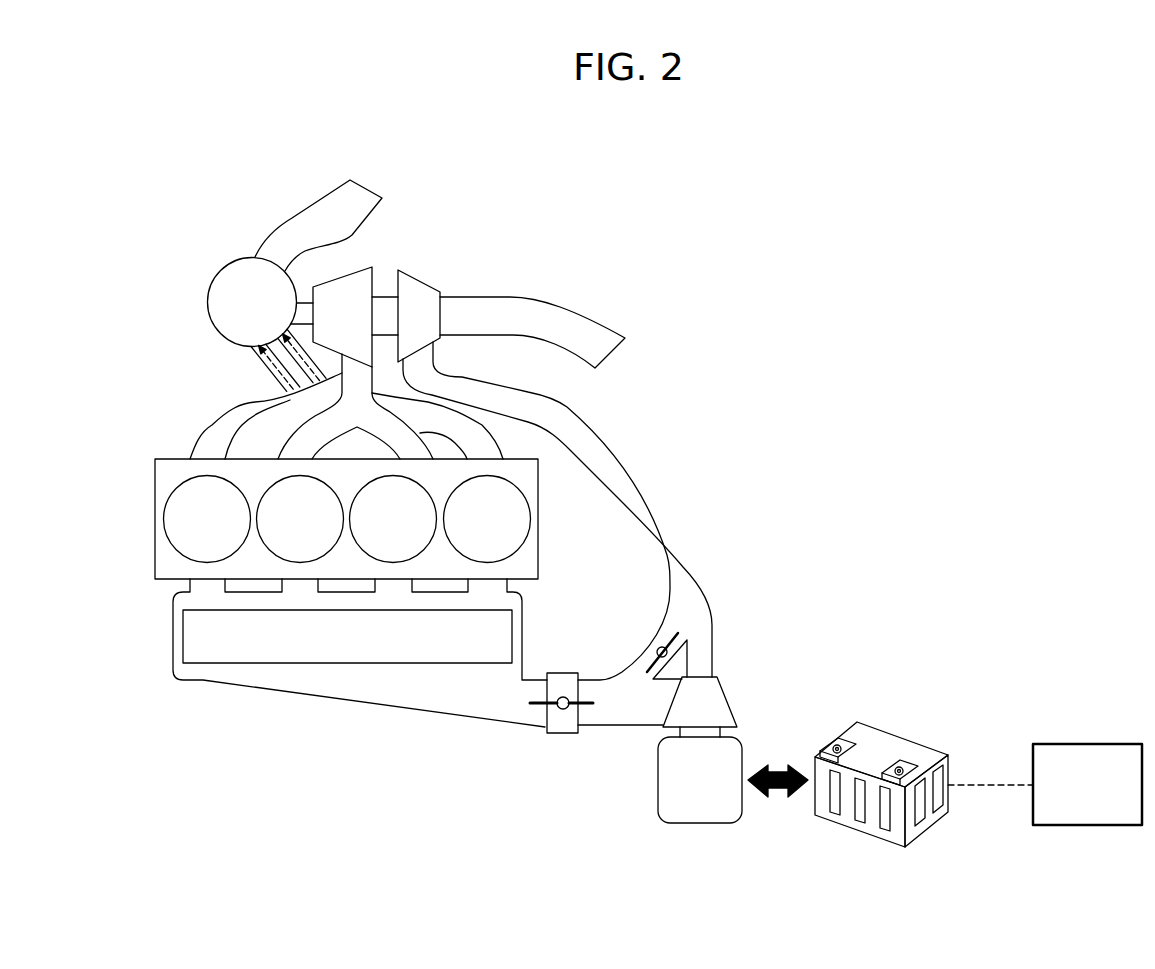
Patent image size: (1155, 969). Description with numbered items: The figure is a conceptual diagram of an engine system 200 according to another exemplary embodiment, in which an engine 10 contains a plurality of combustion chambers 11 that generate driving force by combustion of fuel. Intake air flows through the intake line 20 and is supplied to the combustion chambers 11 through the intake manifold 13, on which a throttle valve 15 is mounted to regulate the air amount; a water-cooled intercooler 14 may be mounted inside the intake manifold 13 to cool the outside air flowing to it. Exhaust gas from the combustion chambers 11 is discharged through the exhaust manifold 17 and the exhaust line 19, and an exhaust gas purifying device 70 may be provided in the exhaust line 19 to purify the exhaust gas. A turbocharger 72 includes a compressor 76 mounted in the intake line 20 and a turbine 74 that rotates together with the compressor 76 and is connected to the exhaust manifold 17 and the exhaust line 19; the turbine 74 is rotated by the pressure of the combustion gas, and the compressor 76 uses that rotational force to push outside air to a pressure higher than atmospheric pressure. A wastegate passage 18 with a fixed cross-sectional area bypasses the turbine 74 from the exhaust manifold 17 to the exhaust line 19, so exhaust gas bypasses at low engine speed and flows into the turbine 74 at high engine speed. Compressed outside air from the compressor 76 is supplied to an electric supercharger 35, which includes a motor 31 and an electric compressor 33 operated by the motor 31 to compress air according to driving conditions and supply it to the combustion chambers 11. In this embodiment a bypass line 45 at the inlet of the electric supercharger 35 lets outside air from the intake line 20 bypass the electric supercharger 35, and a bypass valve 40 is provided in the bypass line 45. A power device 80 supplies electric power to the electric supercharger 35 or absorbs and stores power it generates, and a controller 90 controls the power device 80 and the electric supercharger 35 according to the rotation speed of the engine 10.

The engine system 200 is at (662, 140).
The engine 10 is at (299, 519).
The combustion chamber 11 is at (177, 488).
The intake manifold 13 is at (323, 668).
The water-cooled intercooler 14 is at (247, 663).
The throttle valve 15 is at (545, 717).
The exhaust manifold 17 is at (208, 430).
The wastegate passage 18 is at (275, 384).
The exhaust line 19 is at (310, 210).
The intake line 20 is at (510, 297).
The motor 31 is at (658, 792).
The electric compressor 33 is at (672, 702).
The electric supercharger 35 is at (637, 756).
The bypass valve 40 is at (676, 644).
The bypass line 45 is at (647, 650).
The exhaust gas purifying device 70 is at (212, 266).
The turbocharger 72 is at (393, 257).
The turbine 74 is at (350, 272).
The compressor 76 is at (415, 279).
The power device 80 is at (888, 734).
The controller 90 is at (1083, 744).